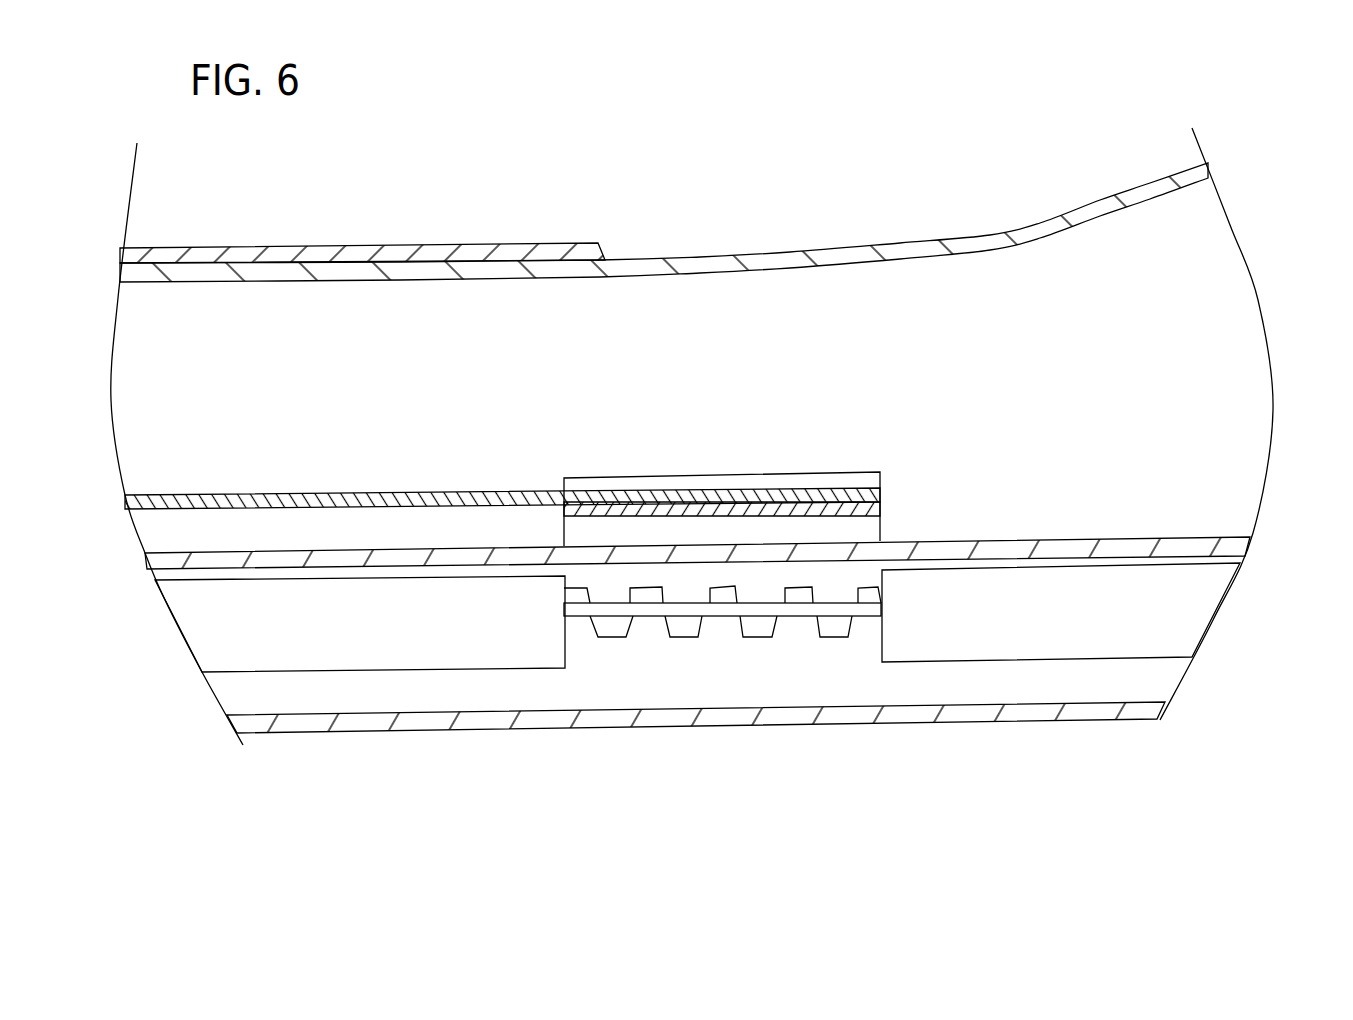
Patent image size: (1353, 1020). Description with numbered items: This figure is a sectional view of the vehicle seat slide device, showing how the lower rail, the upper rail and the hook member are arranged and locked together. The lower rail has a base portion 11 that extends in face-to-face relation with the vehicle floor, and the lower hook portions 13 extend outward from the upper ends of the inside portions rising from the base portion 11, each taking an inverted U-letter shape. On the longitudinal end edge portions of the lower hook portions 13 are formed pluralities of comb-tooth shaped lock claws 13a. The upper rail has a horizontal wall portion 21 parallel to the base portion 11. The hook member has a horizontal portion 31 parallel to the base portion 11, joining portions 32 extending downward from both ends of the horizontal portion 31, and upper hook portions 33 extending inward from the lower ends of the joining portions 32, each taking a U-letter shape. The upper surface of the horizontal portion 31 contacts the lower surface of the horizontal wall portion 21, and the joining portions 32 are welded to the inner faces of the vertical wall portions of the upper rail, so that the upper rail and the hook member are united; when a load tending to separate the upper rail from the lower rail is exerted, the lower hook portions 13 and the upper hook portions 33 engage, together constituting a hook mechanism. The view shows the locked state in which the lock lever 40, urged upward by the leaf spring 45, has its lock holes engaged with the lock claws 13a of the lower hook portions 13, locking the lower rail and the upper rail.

The base portion 11 is at (532, 722).
The lower hook portions 13 is at (948, 550).
The lock claws 13a is at (760, 625).
The horizontal wall portion 21 is at (362, 255).
The horizontal portion 31 is at (787, 258).
The joining portions 32 is at (1188, 345).
The upper hook portions 33 is at (1178, 617).
The lock lever 40 is at (650, 610).
The leaf spring 45 is at (432, 496).